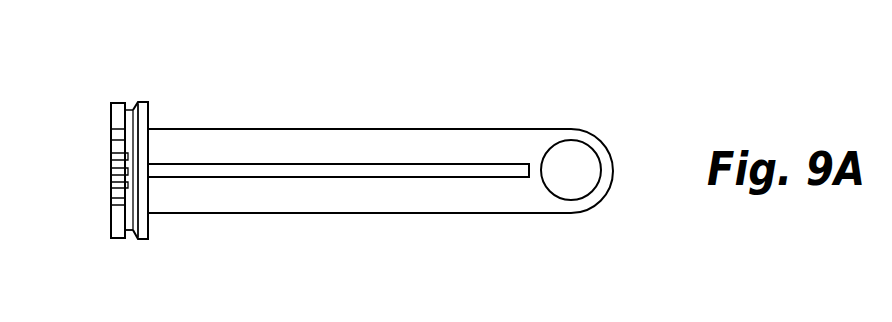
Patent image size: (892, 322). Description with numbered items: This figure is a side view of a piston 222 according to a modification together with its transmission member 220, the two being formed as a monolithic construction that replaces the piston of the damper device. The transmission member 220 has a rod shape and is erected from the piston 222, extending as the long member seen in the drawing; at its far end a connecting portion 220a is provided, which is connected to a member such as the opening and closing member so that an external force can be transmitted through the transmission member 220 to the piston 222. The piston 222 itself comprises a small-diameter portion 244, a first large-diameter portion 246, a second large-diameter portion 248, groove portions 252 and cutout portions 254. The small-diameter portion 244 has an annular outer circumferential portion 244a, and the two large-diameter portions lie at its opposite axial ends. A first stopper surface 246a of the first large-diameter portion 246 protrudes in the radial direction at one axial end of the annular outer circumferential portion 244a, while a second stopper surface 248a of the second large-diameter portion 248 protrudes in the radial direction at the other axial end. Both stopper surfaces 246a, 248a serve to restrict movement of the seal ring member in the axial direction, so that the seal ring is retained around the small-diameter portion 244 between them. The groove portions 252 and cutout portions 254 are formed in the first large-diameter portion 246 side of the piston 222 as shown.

The transmission member 220 is at (429, 202).
The connecting portion 220a is at (603, 168).
The piston 222 is at (150, 193).
The small-diameter portion 244 is at (132, 108).
The annular outer circumferential portion 244a is at (128, 216).
The first large-diameter portion 246 is at (116, 102).
The first stopper surface 246a is at (117, 129).
The second large-diameter portion 248 is at (142, 104).
The second stopper surface 248a is at (138, 116).
The groove portions 252 is at (115, 157).
The cutout portions 254 is at (107, 189).